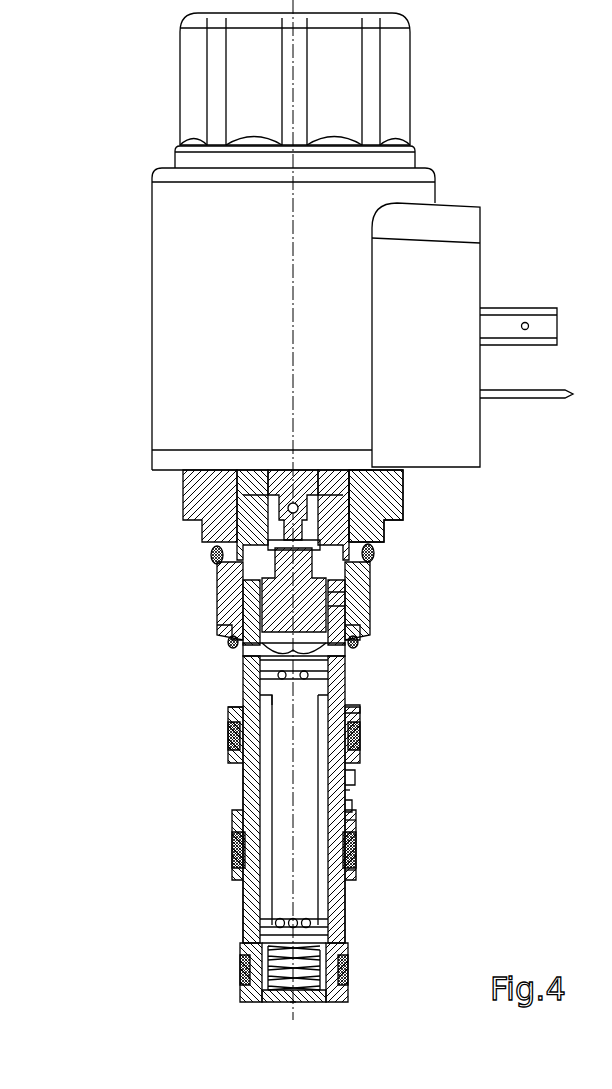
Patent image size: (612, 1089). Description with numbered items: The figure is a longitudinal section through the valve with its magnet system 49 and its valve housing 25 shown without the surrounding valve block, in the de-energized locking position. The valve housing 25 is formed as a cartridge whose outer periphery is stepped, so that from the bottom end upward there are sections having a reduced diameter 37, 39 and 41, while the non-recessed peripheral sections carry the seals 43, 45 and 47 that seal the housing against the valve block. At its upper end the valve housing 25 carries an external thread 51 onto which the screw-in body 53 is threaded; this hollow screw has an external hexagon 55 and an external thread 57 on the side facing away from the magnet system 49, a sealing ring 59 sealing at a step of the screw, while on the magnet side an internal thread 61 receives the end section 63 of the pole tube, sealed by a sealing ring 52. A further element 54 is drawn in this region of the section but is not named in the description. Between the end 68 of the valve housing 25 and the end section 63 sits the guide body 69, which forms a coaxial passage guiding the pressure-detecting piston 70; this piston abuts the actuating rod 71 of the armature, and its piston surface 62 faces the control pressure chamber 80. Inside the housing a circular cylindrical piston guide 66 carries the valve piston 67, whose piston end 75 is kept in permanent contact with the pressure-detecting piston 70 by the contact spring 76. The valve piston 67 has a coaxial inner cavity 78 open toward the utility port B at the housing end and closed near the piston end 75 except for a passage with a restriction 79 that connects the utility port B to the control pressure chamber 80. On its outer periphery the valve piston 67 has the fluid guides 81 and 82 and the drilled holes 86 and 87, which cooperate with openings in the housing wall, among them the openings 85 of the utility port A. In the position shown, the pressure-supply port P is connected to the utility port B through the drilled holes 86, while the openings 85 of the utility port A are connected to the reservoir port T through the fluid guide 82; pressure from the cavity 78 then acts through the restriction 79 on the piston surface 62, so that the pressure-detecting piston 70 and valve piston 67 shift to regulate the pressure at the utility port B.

The magnet system 49 is at (120, 288).
The external hexagon 55 is at (183, 495).
The internal thread 61 is at (400, 495).
The actuating rod 71 is at (183, 507).
The end section of the pole tube 63 is at (200, 538).
The screw-in body 53 is at (405, 518).
The sealing ring 52 is at (212, 553).
The sealing ring 59 is at (375, 557).
The external thread 57 is at (215, 590).
The ring 54 is at (215, 602).
The external thread 51 is at (215, 612).
The end of the valve housing 68 is at (368, 612).
The guide body 69 is at (230, 642).
The pressure-detecting piston 70 is at (362, 631).
The control pressure chamber 80 is at (230, 655).
The piston end 75 is at (245, 675).
The section having a reduced diameter 41 is at (243, 685).
The restriction 79 is at (345, 660).
The reservoir port T is at (345, 698).
The inner cavity 78 is at (358, 713).
The fluid guide 82 is at (242, 770).
The drilled holes 87 is at (230, 714).
The seal 47 is at (228, 737).
The section having a reduced diameter 39 is at (243, 780).
The valve housing 25 is at (345, 775).
The utility port A is at (345, 790).
The openings 85 is at (345, 808).
The valve piston 67 is at (235, 826).
The seal 45 is at (232, 848).
The fluid guide 81 is at (348, 827).
The piston guide 66 is at (348, 876).
The section having a reduced diameter 37 is at (243, 900).
The pressure-supply port P is at (345, 930).
The drilled holes 86 is at (250, 918).
The seal 43 is at (242, 975).
The piston surface 62 is at (306, 712).
The contact spring 76 is at (240, 960).
The utility port B is at (303, 1010).